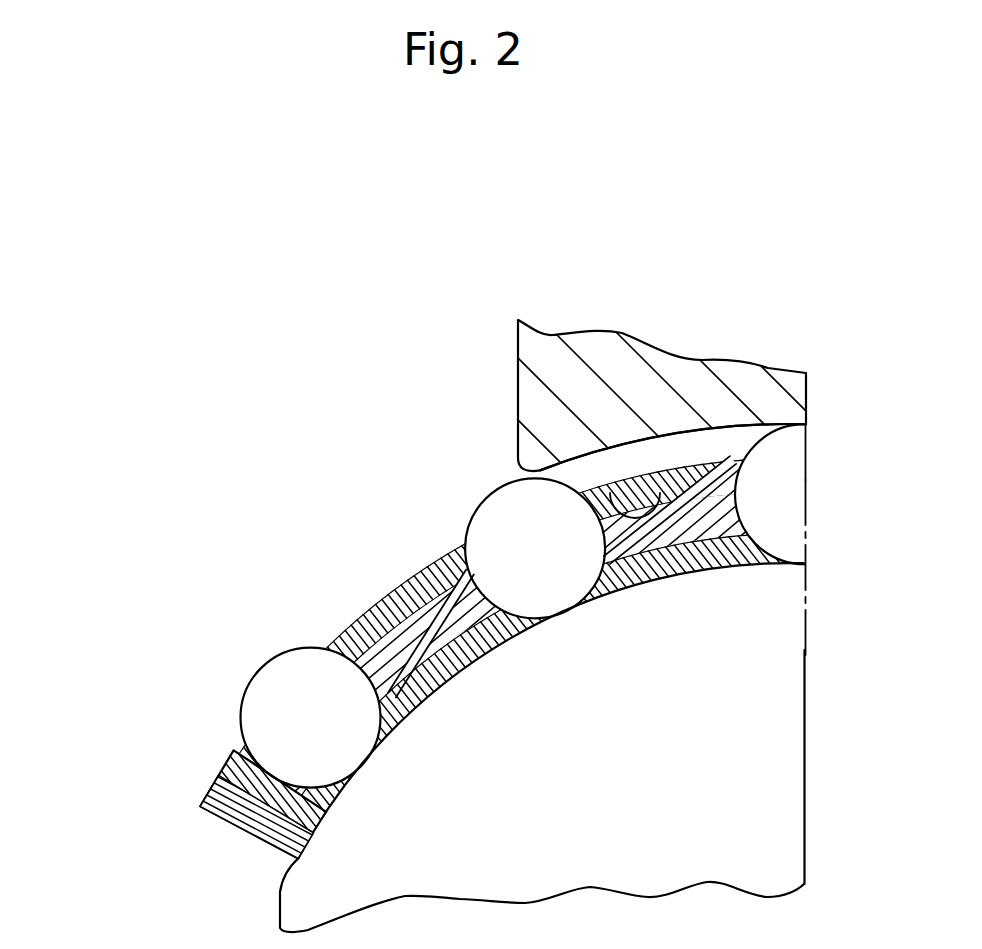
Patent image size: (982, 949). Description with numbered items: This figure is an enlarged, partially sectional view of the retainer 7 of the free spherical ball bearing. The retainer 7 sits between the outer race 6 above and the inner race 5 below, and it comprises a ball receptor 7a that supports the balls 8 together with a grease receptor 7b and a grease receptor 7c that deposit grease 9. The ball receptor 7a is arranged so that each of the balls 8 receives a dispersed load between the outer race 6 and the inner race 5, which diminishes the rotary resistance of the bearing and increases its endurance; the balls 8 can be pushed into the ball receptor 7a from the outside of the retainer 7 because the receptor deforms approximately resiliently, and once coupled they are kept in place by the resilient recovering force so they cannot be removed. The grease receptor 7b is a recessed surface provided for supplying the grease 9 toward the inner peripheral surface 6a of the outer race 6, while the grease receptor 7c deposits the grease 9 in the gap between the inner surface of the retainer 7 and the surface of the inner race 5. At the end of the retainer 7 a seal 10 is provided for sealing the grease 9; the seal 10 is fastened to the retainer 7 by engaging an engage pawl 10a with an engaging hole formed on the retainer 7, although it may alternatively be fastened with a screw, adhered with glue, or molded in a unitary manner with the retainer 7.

The inner race 5 is at (604, 746).
The outer race 6 is at (518, 375).
The inner peripheral surface of outer ring 6a is at (662, 441).
The retainer 7 is at (491, 630).
The ball receptor 7a is at (347, 680).
The grease receptor 7b is at (418, 703).
The grease receptor 7c is at (639, 542).
The balls 8 is at (476, 506).
The grease 9 is at (390, 590).
The seal 10 is at (218, 817).
The engage pawl 10a is at (232, 772).